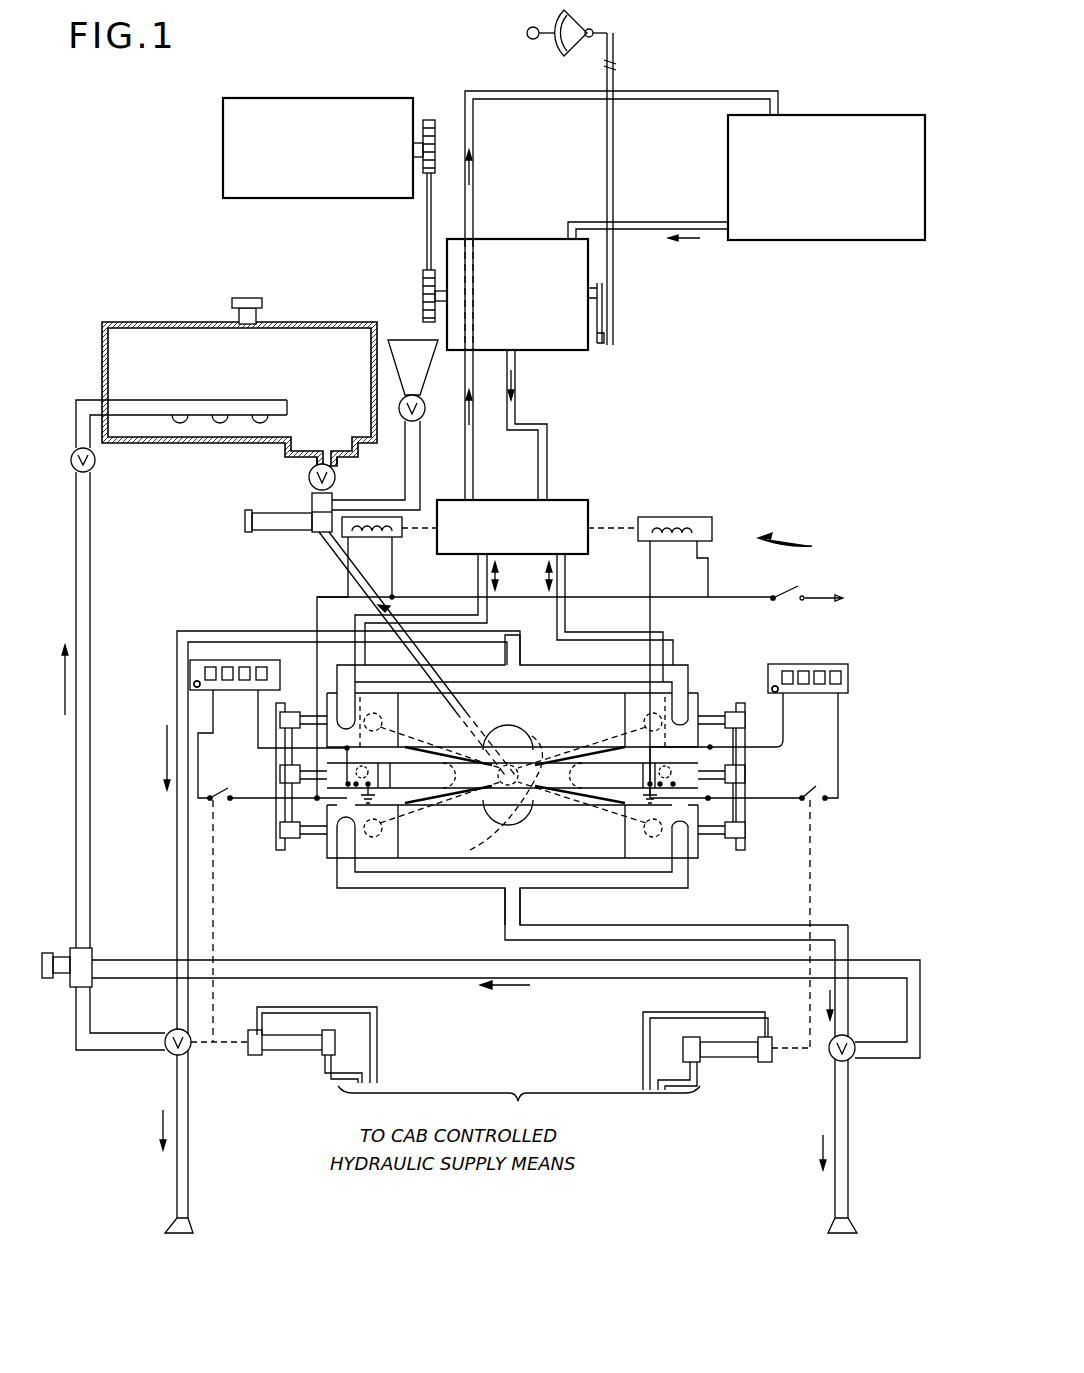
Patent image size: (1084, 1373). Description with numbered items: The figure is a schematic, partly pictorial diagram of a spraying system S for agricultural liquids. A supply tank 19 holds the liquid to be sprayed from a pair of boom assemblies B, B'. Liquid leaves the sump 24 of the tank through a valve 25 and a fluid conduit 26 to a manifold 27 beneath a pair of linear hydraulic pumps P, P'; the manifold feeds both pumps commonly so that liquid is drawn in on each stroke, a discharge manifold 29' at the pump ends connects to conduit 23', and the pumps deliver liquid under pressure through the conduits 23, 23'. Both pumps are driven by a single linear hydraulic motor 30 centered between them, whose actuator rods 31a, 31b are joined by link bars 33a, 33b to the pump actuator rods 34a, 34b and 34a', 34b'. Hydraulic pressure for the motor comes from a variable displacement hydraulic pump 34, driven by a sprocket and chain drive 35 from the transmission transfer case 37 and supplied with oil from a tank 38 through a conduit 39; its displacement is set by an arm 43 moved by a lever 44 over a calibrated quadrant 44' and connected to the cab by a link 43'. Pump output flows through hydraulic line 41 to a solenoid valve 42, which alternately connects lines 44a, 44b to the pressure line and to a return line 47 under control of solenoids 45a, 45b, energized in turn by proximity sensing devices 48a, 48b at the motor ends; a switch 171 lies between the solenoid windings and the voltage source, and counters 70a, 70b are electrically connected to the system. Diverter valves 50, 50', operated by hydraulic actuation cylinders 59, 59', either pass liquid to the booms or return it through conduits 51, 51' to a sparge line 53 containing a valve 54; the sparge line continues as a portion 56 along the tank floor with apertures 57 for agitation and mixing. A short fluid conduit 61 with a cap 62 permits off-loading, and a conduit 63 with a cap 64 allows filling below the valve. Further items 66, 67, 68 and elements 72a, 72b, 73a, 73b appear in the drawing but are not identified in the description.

The supply tank 19 is at (156, 322).
The conduit 23 is at (309, 924).
The conduit 23' is at (866, 1064).
The sump 24 is at (340, 458).
The valve 25 is at (308, 476).
The fluid conduit 26 is at (338, 575).
The manifold 27 is at (420, 880).
The discharge manifold 29' is at (639, 914).
The linear hydraulic motor 30 is at (628, 818).
The actuator rod 31a is at (305, 832).
The actuator rod 31b is at (740, 784).
The link bar 33a is at (278, 770).
The link bar 33b is at (740, 766).
The variable displacement hydraulic pump 34 is at (497, 239).
The actuator rod 34a is at (274, 776).
The actuator rod 34a' is at (288, 871).
The actuator rod 34b is at (728, 756).
The actuator rod 34b' is at (737, 877).
The sprocket and chain drive 35 is at (425, 212).
The transmission transfer case 37 is at (296, 80).
The hydraulic oil supply tank 38 is at (908, 88).
The fluid conduit 39 is at (638, 222).
The hydraulic line 41 is at (528, 430).
The solenoid valve 42 is at (565, 500).
The arm 43 is at (621, 313).
The link 43' is at (632, 189).
The lever 44 is at (526, 54).
The quadrant 44' is at (578, 47).
The hydraulic line 44a is at (478, 576).
The hydraulic line 44b is at (565, 572).
The solenoid 45a is at (377, 657).
The solenoid 45b is at (665, 560).
The hydraulic fluid return line 47 is at (473, 478).
The proximity sensing device 48a is at (512, 730).
The proximity sensing device 48b is at (760, 740).
The diverter valve 50 is at (206, 1065).
The diverter valve 50' is at (837, 1068).
The conduit 51 is at (120, 1018).
The conduit 51' is at (515, 997).
The sparge line 53 is at (90, 775).
The valve 54 is at (96, 462).
The sparge line portion 56 is at (265, 395).
The apertures 57 is at (290, 420).
The hydraulic actuation cylinder 59 is at (312, 1053).
The hydraulic actuation cylinder 59' is at (708, 1058).
The fluid conduit 61 is at (60, 980).
The cap 62 is at (42, 960).
The conduit 63 is at (305, 535).
The cap 64 is at (245, 518).
The conduit 66 is at (412, 455).
The funnel 67 is at (428, 360).
The valve 68 is at (425, 406).
The counter 70a is at (190, 670).
The counter 70b is at (830, 664).
The switch 72a is at (215, 795).
The switch 72b is at (812, 800).
The terminal 73a is at (195, 688).
The terminal 73b is at (778, 692).
The switch 171 is at (790, 590).
The boom assembly B is at (189, 1171).
The boom assembly B' is at (858, 1196).
The linear hydraulic pump P is at (512, 691).
The linear hydraulic pump P' is at (512, 865).
The spraying system S is at (794, 547).